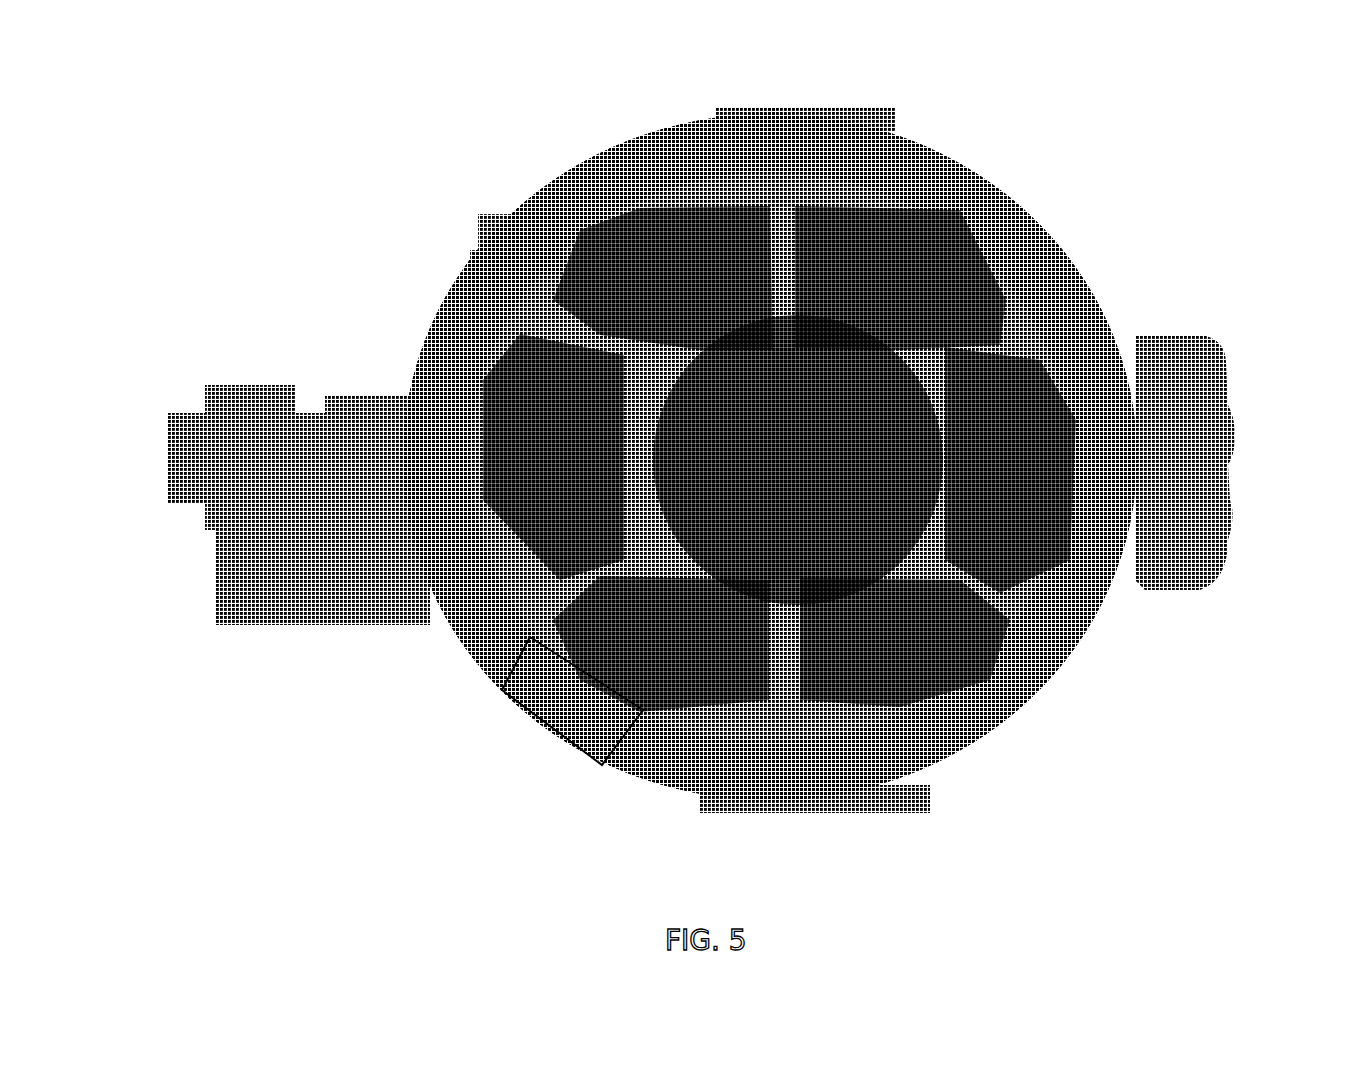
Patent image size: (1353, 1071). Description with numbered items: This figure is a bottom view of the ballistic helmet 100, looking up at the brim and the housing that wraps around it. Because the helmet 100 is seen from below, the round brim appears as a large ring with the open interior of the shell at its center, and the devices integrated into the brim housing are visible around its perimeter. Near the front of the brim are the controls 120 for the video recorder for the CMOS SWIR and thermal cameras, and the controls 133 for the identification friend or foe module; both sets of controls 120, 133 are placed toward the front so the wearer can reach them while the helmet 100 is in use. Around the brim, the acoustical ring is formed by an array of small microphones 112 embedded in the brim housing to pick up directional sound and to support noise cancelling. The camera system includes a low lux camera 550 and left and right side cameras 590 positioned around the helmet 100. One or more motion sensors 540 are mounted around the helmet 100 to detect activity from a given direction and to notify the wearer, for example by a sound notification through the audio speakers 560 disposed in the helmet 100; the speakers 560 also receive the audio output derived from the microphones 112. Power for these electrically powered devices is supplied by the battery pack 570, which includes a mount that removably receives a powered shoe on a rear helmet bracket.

The ballistic helmet 100 is at (1181, 118).
The microphones 112 is at (1007, 193).
The controls for video recorder 120 is at (465, 265).
The controls for IFF module 133 is at (543, 728).
The motion sensors 540 is at (783, 97).
The low lux camera 550 is at (512, 206).
The audio speakers 560 is at (817, 753).
The battery pack 570 is at (1243, 432).
The left and right side cameras 590 is at (743, 93).